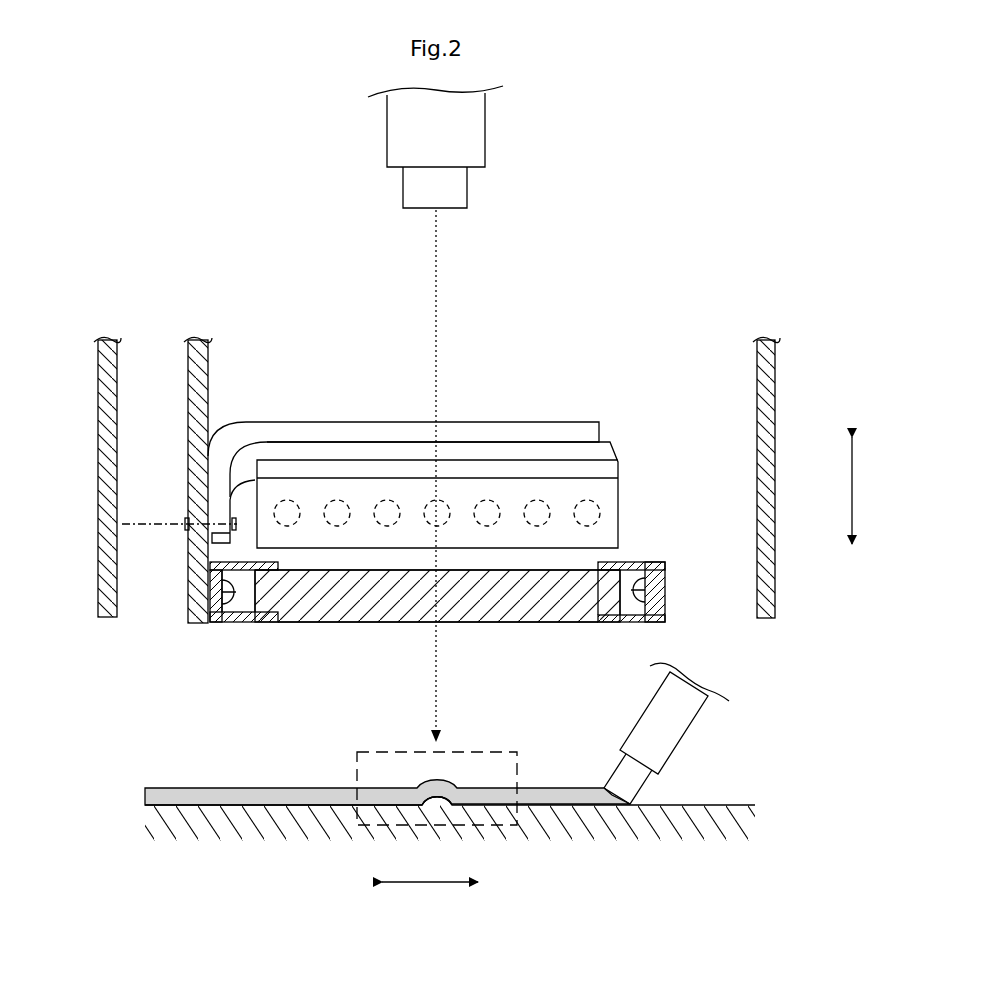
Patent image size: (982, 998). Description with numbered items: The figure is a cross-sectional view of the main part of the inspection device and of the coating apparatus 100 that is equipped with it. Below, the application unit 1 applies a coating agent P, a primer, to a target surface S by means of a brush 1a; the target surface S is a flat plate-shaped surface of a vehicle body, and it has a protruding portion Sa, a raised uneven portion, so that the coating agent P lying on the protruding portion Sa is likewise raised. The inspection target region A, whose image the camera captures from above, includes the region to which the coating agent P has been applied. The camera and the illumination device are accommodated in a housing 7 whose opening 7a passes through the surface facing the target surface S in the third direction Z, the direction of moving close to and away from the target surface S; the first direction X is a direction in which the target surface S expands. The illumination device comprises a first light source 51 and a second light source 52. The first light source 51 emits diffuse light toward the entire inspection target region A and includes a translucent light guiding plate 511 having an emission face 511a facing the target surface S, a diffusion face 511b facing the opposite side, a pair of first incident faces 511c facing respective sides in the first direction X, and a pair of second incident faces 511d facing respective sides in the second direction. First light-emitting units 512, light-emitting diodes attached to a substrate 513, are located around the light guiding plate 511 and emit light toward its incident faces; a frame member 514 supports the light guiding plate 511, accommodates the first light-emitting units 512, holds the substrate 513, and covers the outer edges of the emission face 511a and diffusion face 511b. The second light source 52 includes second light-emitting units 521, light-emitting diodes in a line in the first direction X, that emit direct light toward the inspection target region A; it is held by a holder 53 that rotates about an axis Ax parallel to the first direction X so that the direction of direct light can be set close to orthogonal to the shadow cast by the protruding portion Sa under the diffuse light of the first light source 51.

The coating apparatus 100 is at (186, 138).
The opening 7a is at (150, 626).
The housing 7 is at (775, 578).
The axis Ax is at (155, 520).
The holder 53 is at (268, 432).
The second light source 52 is at (626, 450).
The second light-emitting units 521 is at (585, 499).
The first light source 51 is at (692, 528).
The light guiding plate 511 is at (545, 628).
The emission face 511a is at (466, 626).
The diffusion face 511b is at (580, 565).
The first incident faces 511c is at (254, 610).
The second incident faces 511d is at (355, 604).
The first light-emitting units 512 is at (226, 592).
The substrate 513 is at (226, 616).
The frame member 514 is at (657, 592).
The application unit 1 is at (703, 716).
The brush 1a is at (628, 772).
The target surface S is at (688, 804).
The protruding portion Sa is at (426, 796).
The coating agent P is at (215, 788).
The inspection target region A is at (357, 754).
The first direction X is at (430, 900).
The third direction Z is at (865, 490).